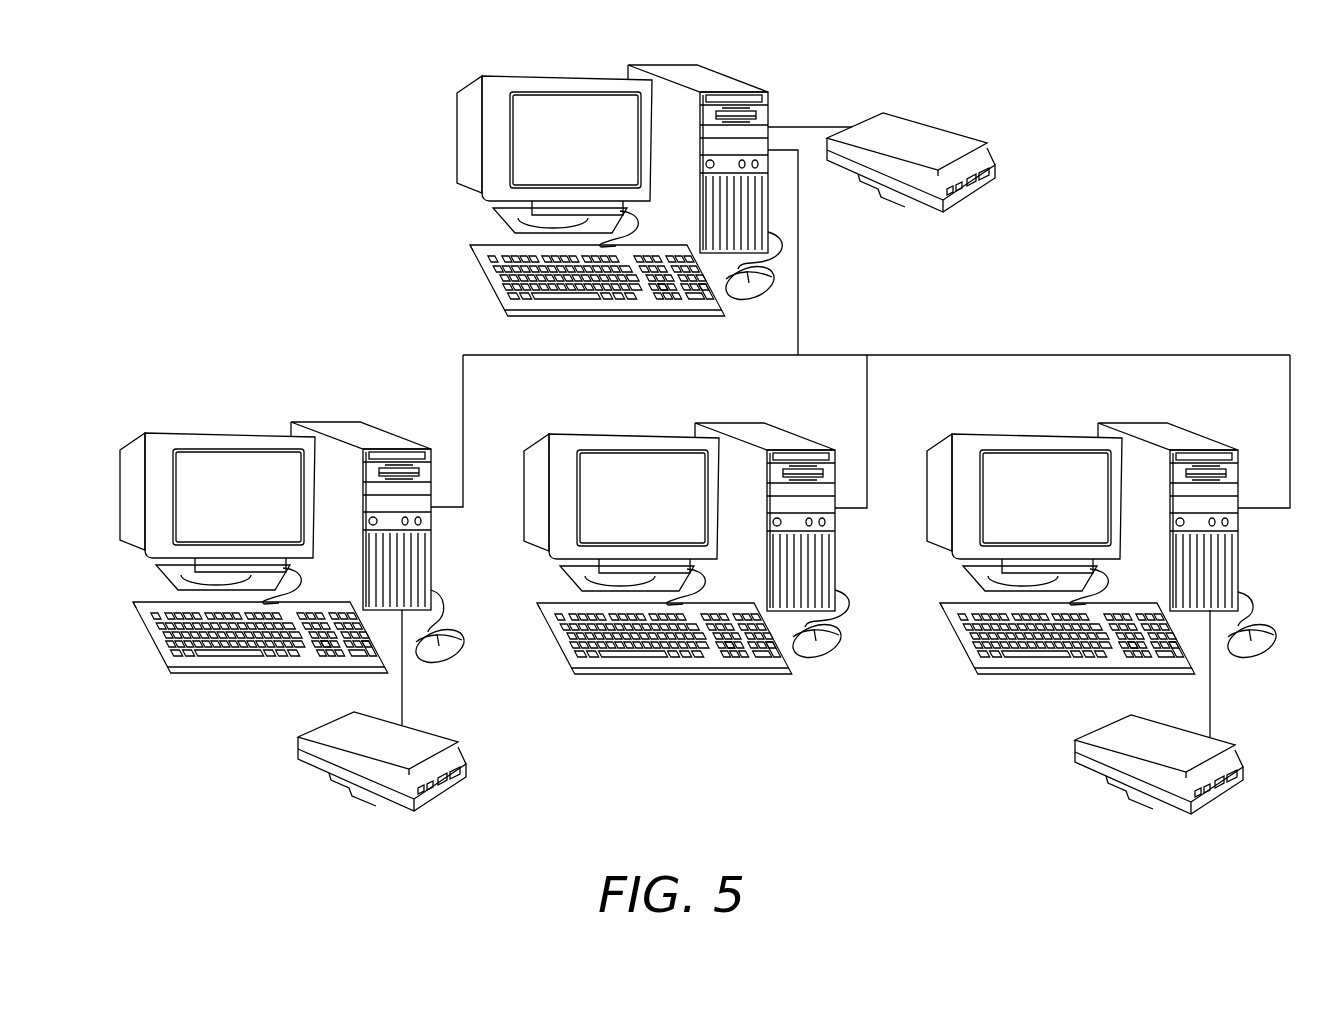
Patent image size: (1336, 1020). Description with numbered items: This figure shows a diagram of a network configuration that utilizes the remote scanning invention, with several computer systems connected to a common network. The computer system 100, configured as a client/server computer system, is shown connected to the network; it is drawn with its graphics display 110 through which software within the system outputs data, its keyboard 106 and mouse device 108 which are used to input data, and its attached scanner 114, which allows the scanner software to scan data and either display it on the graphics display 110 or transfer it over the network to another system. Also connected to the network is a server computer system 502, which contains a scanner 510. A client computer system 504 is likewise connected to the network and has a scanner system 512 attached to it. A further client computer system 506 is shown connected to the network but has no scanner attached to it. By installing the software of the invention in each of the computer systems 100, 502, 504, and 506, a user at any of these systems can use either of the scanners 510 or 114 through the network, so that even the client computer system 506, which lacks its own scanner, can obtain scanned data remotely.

The server computer system 502 is at (755, 88).
The client computer system 504 is at (398, 437).
The client computer system 506 is at (797, 437).
The computer system 100 is at (1123, 556).
The graphics display 110 is at (1025, 428).
The keyboard 106 is at (1007, 675).
The mouse device 108 is at (1278, 628).
The scanner 114 is at (1212, 802).
The scanner 510 is at (963, 203).
The scanner system 512 is at (437, 802).